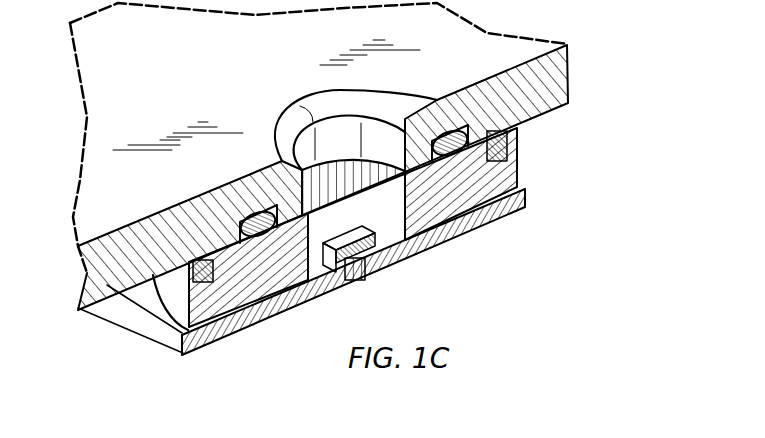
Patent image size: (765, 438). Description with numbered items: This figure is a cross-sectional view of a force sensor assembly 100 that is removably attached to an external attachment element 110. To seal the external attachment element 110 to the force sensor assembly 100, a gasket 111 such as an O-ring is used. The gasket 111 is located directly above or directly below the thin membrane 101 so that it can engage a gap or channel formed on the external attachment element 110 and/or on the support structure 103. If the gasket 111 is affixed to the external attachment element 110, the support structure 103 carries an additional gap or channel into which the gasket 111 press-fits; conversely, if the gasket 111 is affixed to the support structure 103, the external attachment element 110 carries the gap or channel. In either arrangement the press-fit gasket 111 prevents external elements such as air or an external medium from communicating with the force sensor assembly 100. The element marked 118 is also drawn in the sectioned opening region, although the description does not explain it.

The force sensor assembly 100 is at (535, 20).
The external attachment element 110 is at (553, 78).
The thin membrane 101 is at (355, 176).
The liner of the opening 118 is at (342, 160).
The support structure 103 is at (510, 162).
The gasket 111 is at (247, 213).